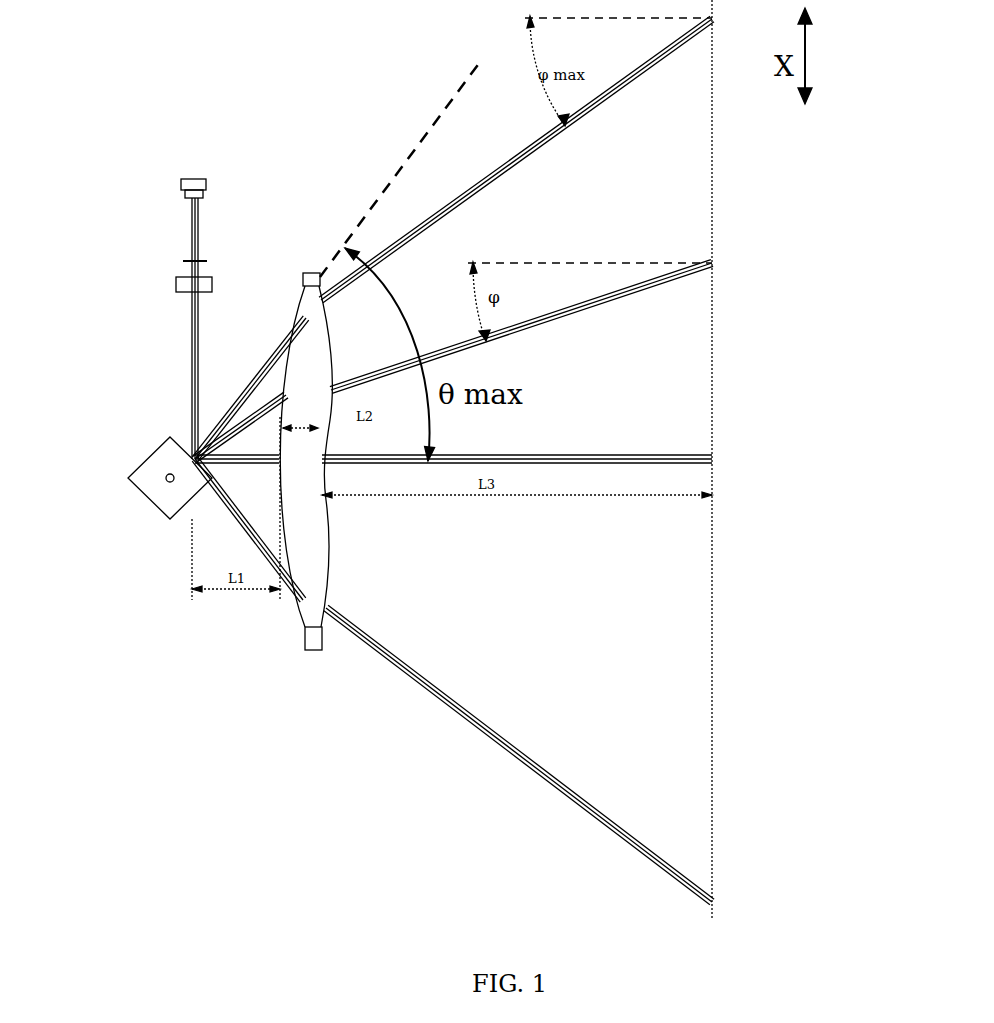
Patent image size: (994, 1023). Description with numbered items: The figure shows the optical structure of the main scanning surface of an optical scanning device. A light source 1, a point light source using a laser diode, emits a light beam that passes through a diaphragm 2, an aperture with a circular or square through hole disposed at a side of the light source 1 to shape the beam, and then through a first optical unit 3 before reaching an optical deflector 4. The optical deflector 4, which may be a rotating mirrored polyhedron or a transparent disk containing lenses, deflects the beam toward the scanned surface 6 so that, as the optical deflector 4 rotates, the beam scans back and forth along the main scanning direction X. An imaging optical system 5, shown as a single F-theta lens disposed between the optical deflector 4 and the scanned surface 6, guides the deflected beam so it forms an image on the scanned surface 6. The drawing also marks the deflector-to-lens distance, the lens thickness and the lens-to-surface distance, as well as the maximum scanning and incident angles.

The light source 1 is at (181, 183).
The diaphragm 2 is at (183, 261).
The first optical unit 3 is at (176, 283).
The optical deflector 4 is at (141, 464).
The imaging optical system 5 is at (304, 626).
The scanned surface 6 is at (708, 770).